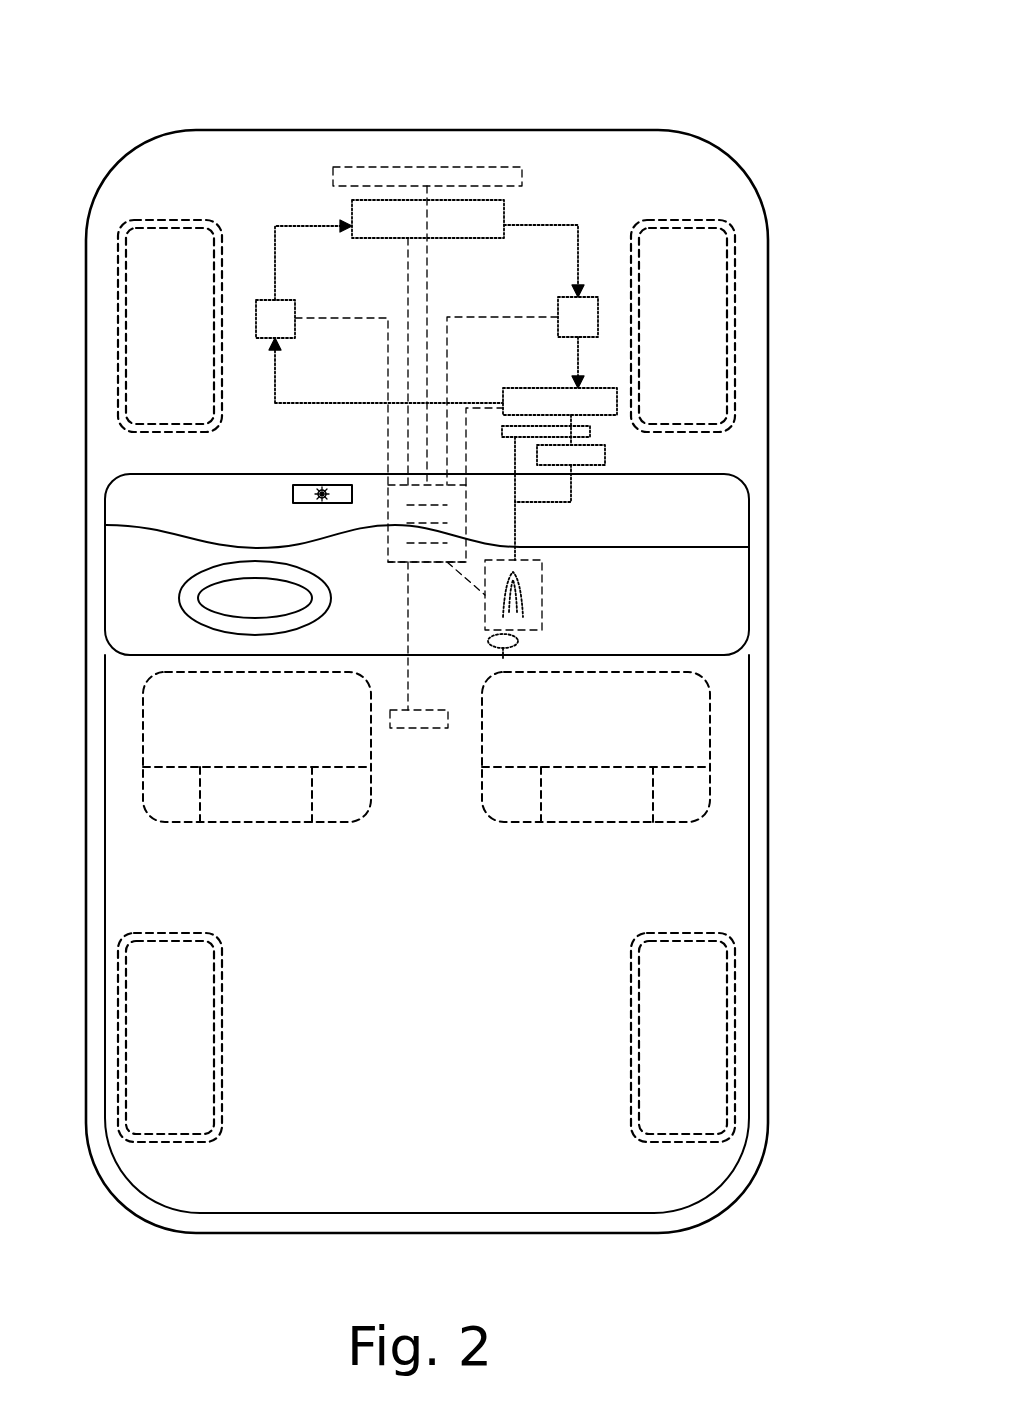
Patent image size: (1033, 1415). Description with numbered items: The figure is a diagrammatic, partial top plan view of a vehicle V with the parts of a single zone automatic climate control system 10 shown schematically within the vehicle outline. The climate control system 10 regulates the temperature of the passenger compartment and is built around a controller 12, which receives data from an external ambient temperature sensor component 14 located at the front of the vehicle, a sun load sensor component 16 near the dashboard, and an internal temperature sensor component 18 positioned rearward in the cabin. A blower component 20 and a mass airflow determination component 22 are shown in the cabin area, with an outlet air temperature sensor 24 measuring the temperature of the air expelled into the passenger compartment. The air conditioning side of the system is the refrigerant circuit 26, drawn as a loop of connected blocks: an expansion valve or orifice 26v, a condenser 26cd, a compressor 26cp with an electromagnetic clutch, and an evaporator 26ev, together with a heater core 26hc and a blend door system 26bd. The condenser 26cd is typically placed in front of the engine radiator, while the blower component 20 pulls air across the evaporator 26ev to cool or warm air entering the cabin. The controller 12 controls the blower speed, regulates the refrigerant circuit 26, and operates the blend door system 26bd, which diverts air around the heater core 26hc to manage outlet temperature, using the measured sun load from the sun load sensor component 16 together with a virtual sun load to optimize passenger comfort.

The vehicle V is at (712, 92).
The automatic climate control system 10 is at (388, 513).
The controller 12 is at (387, 557).
The external ambient temperature sensor component 14 is at (347, 167).
The sun load sensor component 16 is at (330, 485).
The internal temperature sensor component 18 is at (408, 728).
The blower component 20 is at (543, 598).
The mass airflow determination component 22 is at (522, 641).
The outlet air temperature sensor 24 is at (506, 655).
The refrigerant circuit 26 is at (294, 206).
The expansion valve or orifice 26v is at (257, 300).
The condenser 26cd is at (505, 205).
The compressor 26cp is at (558, 315).
The evaporator 26ev is at (517, 385).
The blend door system 26bd is at (590, 431).
The heater core 26hc is at (606, 453).